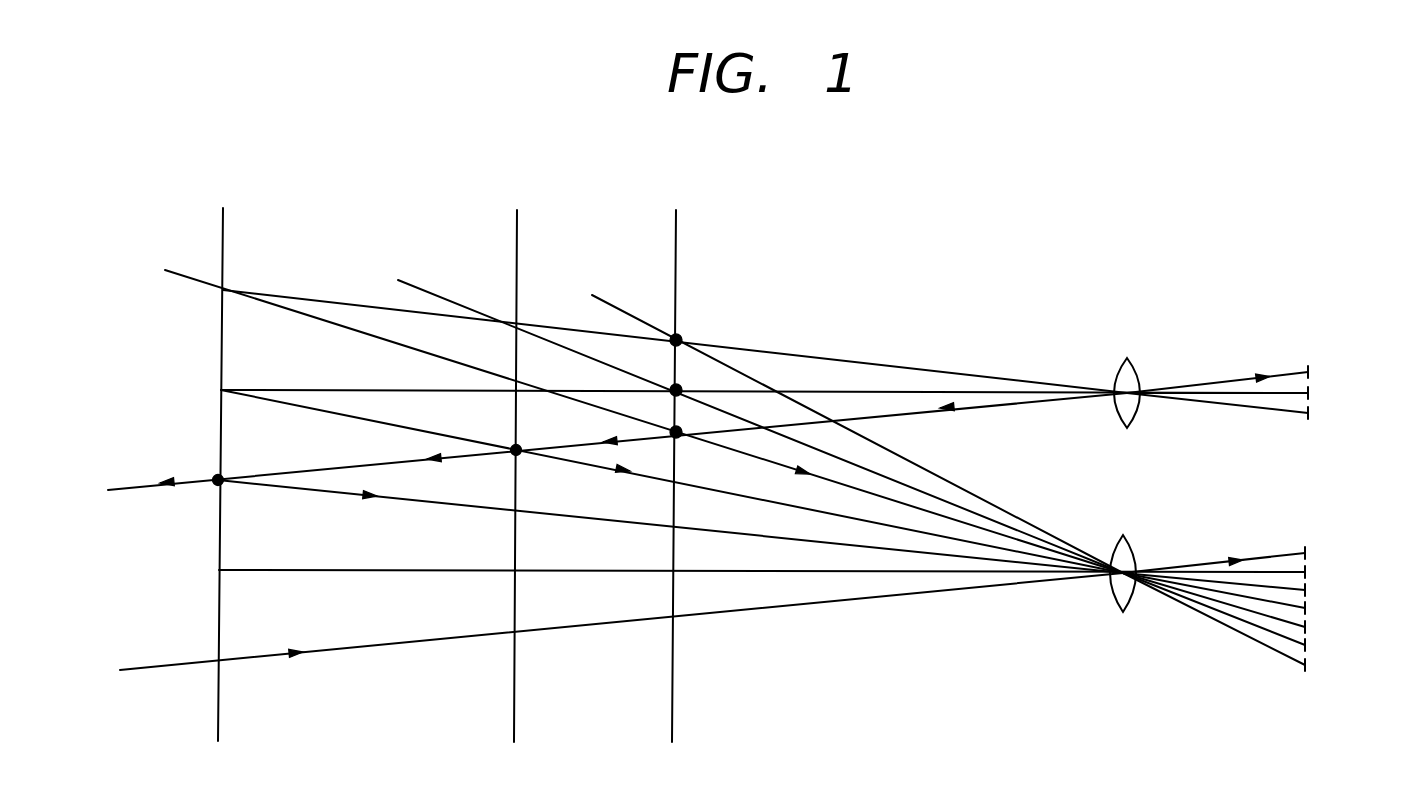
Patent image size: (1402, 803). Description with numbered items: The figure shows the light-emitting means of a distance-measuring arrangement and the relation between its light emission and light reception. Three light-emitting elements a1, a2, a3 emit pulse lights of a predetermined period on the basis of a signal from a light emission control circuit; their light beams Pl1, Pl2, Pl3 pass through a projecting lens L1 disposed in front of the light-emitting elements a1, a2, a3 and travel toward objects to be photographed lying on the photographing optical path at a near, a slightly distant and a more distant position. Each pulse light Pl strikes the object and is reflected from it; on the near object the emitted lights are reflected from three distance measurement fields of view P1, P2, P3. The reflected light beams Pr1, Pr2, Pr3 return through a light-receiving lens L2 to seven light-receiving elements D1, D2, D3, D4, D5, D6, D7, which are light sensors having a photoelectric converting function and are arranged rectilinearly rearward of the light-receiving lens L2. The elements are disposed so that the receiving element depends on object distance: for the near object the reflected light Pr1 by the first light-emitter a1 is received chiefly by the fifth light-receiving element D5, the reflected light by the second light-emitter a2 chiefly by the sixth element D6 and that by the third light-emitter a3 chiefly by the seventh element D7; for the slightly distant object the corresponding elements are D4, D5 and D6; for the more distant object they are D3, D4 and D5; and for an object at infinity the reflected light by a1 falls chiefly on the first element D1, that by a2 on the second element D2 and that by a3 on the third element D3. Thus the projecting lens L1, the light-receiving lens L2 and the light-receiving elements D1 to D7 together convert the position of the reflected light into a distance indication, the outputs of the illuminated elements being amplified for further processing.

The distance measurement field of view P1 is at (678, 434).
The distance measurement field of view P2 is at (678, 390).
The distance measurement field of view P3 is at (676, 340).
The pulse light Pl is at (617, 483).
The reflected light beam Pr1 is at (907, 502).
The reflected light beam Pr2 is at (882, 475).
The reflected light beam Pr3 is at (858, 437).
The projecting lens L1 is at (1135, 372).
The light-receiving lens L2 is at (1133, 550).
The light beam Pl1 is at (1223, 380).
The light beam Pl2 is at (1277, 390).
The light beam Pl3 is at (1293, 408).
The light-emitting element a1 is at (1312, 371).
The light-emitting element a2 is at (1312, 393).
The light-emitting element a3 is at (1312, 413).
The light-receiving element D1 is at (1308, 551).
The light-receiving element D2 is at (1308, 570).
The light-receiving element D3 is at (1308, 589).
The light-receiving element D4 is at (1308, 607).
The light-receiving element D5 is at (1308, 627).
The light-receiving element D6 is at (1308, 646).
The light-receiving element D7 is at (1308, 665).